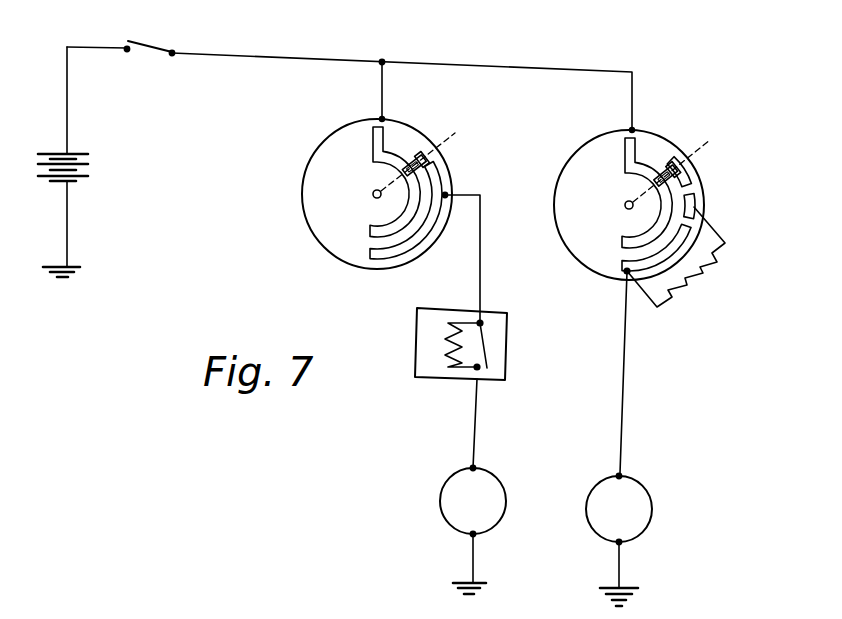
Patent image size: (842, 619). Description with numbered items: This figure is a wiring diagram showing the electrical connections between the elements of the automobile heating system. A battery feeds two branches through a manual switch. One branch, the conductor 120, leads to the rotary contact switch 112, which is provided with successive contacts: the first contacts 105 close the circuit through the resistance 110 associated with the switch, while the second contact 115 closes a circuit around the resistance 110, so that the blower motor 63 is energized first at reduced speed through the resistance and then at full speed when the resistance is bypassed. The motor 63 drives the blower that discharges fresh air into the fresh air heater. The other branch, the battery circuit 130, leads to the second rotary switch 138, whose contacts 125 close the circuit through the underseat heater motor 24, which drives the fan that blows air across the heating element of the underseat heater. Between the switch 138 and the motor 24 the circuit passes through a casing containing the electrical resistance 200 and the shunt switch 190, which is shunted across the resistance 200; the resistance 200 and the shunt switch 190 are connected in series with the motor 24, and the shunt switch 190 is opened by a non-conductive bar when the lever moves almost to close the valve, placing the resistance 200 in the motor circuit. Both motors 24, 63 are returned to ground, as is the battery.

The conductor 120 is at (236, 56).
The battery circuit 130 is at (383, 101).
The second rotary switch 138 is at (361, 204).
The contacts 125 is at (427, 231).
The rotary contact switch 112 is at (650, 211).
The first contacts 105 is at (698, 205).
The resistance 110 is at (697, 283).
The second contact 115 is at (622, 268).
The shunt switch 190 is at (486, 347).
The electrical resistance 200 is at (446, 333).
The underseat heater motor 24 is at (444, 487).
The motor 63 is at (647, 492).